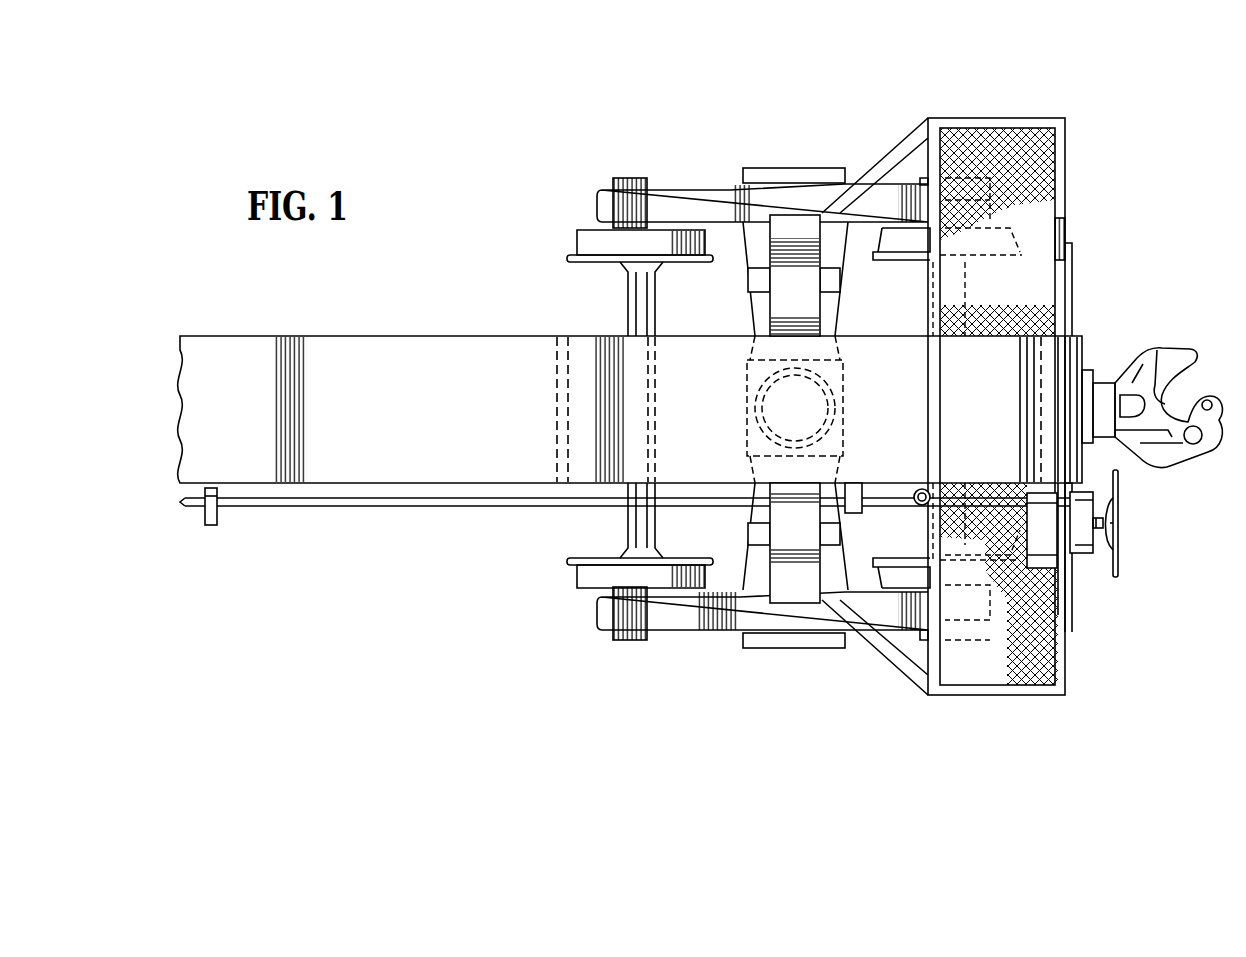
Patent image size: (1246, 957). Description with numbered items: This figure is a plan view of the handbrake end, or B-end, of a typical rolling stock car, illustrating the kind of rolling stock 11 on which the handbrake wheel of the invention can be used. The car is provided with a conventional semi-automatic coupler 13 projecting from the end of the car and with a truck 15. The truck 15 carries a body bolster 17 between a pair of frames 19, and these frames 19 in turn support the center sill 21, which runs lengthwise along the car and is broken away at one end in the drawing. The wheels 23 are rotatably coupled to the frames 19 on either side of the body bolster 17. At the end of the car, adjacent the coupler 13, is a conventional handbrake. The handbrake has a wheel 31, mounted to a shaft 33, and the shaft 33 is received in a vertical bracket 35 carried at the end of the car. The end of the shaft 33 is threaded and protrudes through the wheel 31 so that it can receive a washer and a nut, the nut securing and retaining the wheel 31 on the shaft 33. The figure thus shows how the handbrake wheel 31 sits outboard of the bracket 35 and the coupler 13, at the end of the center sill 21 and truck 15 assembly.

The rolling stock 11 is at (795, 116).
The semi-automatic coupler 13 is at (1162, 352).
The truck 15 is at (728, 192).
The body bolster 17 is at (752, 318).
The frames 19 is at (601, 204).
The center sill 21 is at (460, 346).
The wheels 23 is at (585, 243).
The wheel 31 is at (1118, 568).
The shaft 33 is at (1104, 525).
The vertical bracket 35 is at (1047, 556).